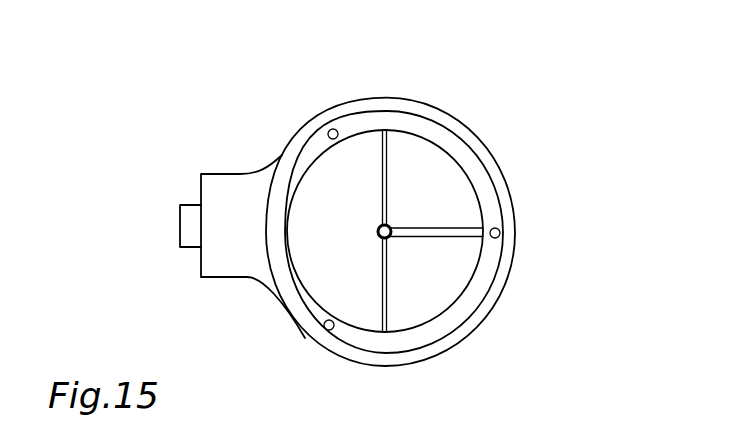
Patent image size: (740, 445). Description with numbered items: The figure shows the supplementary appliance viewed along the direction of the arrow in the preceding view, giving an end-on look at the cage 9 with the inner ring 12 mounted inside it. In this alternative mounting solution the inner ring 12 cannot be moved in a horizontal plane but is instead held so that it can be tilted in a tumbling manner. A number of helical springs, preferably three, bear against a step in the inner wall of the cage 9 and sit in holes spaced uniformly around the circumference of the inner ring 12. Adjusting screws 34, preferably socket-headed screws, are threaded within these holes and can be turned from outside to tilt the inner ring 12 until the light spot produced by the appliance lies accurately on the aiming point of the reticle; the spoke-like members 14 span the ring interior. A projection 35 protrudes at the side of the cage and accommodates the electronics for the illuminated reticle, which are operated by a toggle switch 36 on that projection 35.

The cage 9 is at (432, 115).
The inner ring 12 is at (287, 177).
The spokes 14 is at (388, 178).
The adjusting screws 34 is at (339, 135).
The projection 35 is at (232, 243).
The toggle switch 36 is at (192, 226).